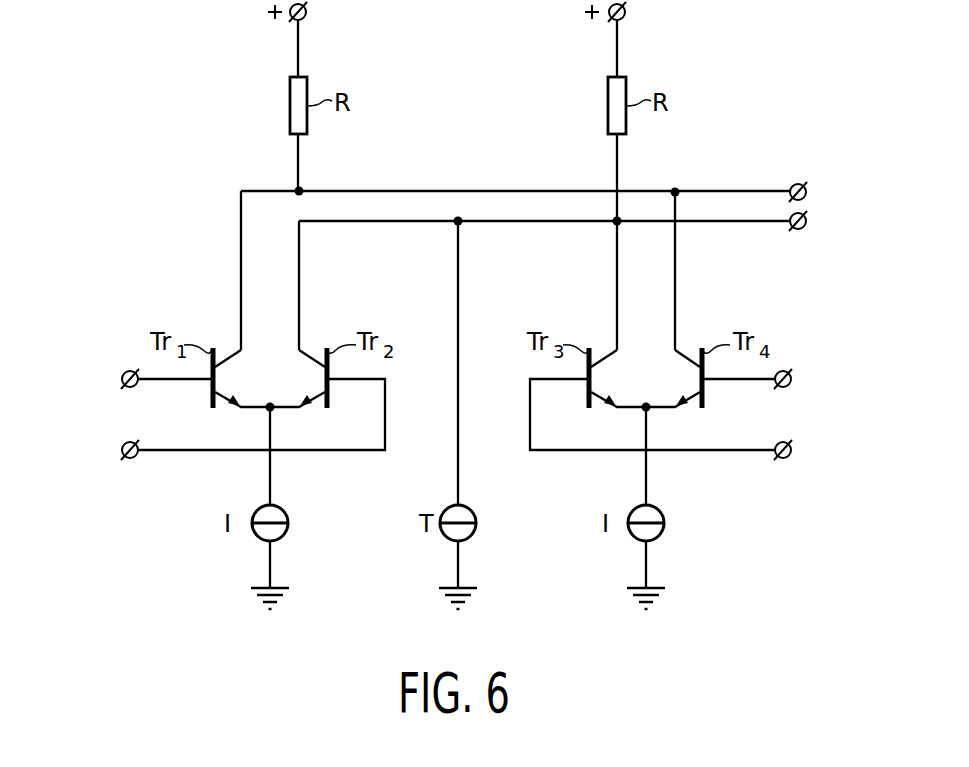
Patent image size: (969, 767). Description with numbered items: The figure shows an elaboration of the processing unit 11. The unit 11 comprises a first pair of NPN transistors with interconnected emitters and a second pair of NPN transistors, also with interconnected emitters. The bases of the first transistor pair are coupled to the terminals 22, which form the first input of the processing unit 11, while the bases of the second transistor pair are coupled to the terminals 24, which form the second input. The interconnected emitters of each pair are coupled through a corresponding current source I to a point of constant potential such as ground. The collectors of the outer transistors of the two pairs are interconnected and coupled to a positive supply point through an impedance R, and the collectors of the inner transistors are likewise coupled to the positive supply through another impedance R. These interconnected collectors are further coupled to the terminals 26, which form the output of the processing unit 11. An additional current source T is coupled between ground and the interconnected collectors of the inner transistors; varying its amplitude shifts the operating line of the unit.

The processing unit 11 is at (224, 148).
The terminals forming the first input 22 is at (122, 446).
The terminals forming the second input 24 is at (791, 446).
The terminals forming the output 26 is at (806, 226).